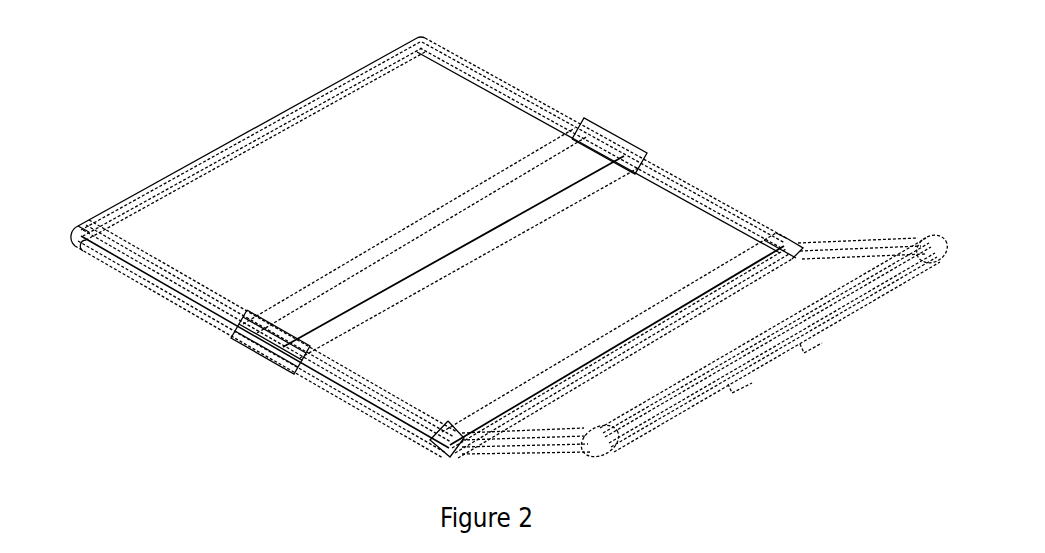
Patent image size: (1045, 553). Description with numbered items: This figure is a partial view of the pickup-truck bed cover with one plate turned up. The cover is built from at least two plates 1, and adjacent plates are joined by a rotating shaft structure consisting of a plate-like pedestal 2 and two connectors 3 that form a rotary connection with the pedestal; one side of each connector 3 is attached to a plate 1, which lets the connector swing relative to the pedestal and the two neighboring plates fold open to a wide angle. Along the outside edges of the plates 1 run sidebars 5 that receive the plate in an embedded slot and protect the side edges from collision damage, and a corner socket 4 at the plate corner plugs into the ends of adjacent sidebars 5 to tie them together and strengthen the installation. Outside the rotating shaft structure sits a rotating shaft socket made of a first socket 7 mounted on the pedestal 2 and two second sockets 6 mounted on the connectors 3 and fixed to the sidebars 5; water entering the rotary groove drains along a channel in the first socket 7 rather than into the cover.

The plate 1 is at (483, 108).
The pedestal 2 is at (580, 158).
The connector 3 is at (597, 178).
The corner socket 4 is at (76, 247).
The sidebar 5 is at (142, 277).
The second socket 6 is at (263, 357).
The first socket 7 is at (240, 338).